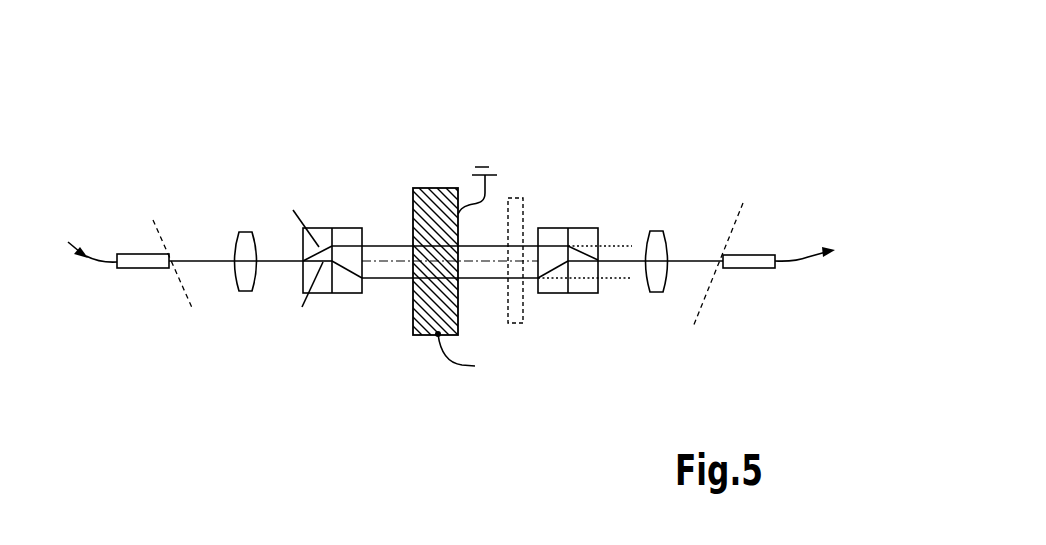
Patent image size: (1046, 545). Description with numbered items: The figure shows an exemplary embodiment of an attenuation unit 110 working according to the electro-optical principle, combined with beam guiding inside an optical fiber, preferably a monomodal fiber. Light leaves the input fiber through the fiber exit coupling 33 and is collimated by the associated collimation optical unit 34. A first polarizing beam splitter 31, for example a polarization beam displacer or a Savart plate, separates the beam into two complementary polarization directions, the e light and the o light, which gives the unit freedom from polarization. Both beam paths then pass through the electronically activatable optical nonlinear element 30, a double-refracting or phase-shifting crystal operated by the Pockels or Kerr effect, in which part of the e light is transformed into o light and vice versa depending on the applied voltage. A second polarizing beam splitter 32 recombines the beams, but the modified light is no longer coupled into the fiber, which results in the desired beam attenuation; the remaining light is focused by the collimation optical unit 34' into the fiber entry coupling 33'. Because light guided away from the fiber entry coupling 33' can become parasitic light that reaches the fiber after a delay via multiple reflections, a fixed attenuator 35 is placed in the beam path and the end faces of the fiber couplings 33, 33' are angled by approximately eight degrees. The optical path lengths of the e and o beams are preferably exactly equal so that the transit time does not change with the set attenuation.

The attenuation unit 110 is at (166, 67).
The fiber exit coupling 33 is at (108, 306).
The collimation optical unit 34 is at (166, 196).
The first polarizing beam splitter 31 is at (340, 235).
The electronically activatable optical nonlinear element 30 is at (433, 188).
The fixed attenuator 35 is at (517, 317).
The second polarizing beam splitter 32 is at (583, 232).
The collimation optical unit 34' is at (749, 208).
The fiber entry coupling 33' is at (786, 308).